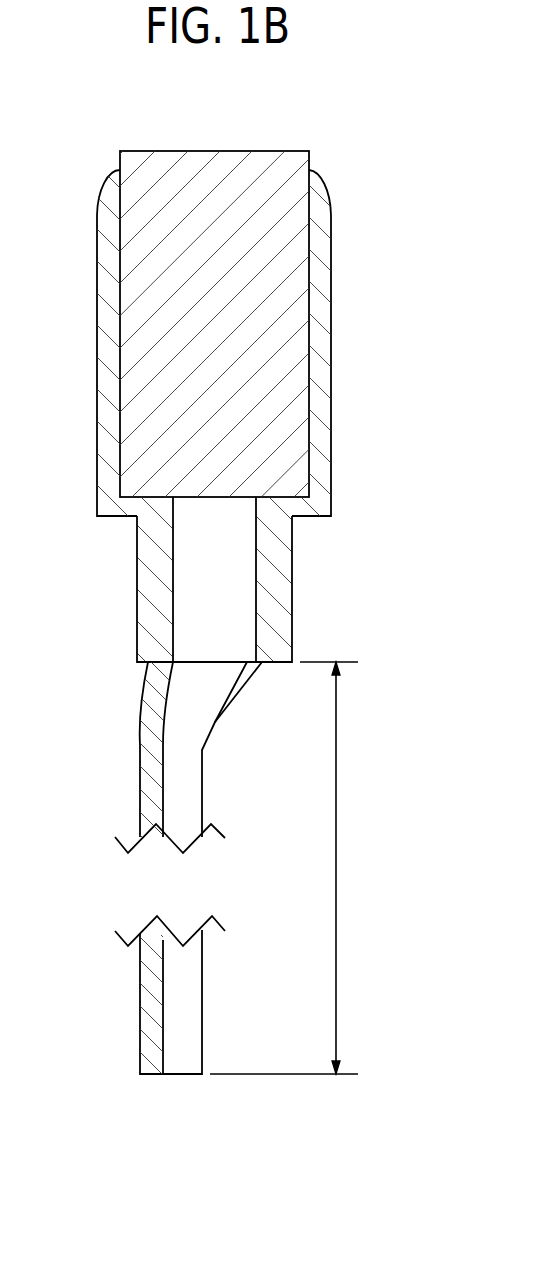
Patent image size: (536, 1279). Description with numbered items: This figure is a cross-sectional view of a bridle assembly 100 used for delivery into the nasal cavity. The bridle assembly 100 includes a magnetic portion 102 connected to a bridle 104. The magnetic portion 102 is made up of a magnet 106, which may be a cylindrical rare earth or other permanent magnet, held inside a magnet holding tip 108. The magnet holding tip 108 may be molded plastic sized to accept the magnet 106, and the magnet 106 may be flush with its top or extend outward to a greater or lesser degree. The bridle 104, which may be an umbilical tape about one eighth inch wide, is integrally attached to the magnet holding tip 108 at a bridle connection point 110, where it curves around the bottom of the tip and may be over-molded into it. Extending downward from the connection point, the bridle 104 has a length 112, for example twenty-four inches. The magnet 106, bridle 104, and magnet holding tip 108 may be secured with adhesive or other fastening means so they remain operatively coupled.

The bridle assembly 100 is at (270, 124).
The magnetic portion 102 is at (68, 527).
The bridle 104 is at (140, 1013).
The magnet 106 is at (138, 151).
The magnet holding tip 108 is at (280, 560).
The bridle connection point 110 is at (103, 674).
The length 112 is at (336, 870).